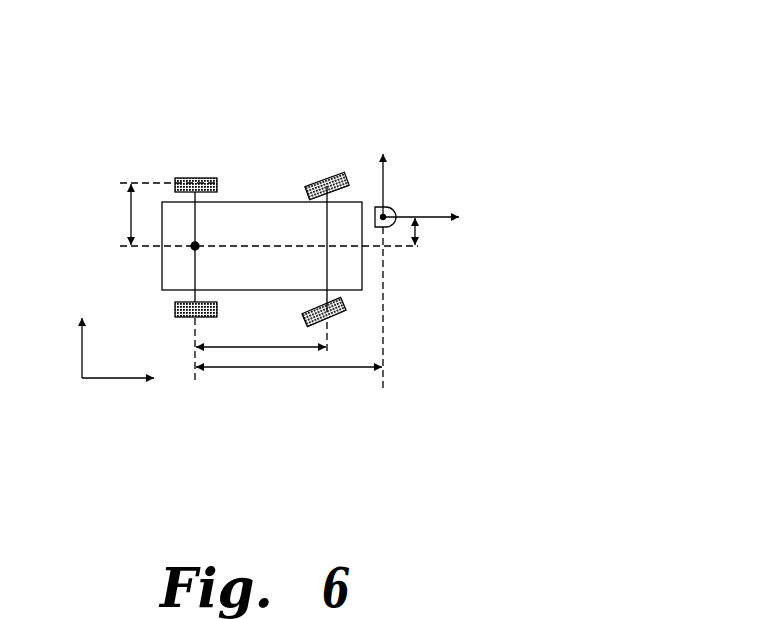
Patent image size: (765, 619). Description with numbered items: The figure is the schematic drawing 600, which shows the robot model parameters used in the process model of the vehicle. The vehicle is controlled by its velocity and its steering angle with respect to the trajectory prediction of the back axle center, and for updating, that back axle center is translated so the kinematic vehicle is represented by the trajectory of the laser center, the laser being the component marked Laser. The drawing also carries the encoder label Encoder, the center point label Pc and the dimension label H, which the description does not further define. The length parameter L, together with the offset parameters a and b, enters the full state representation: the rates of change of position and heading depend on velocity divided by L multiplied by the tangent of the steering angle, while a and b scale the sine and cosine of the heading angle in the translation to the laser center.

The schematic drawing 600 is at (488, 101).
The wheel encoder (drive wheels with odometry encoders) Encoder is at (192, 171).
The laser Laser is at (374, 199).
The vehicle center point Pc(yc,xc) Pc is at (234, 233).
The half wheel-base width H is at (115, 214).
The vehicle model length parameter L is at (261, 336).
The first offset parameter a is at (289, 358).
The second offset parameter b is at (427, 233).